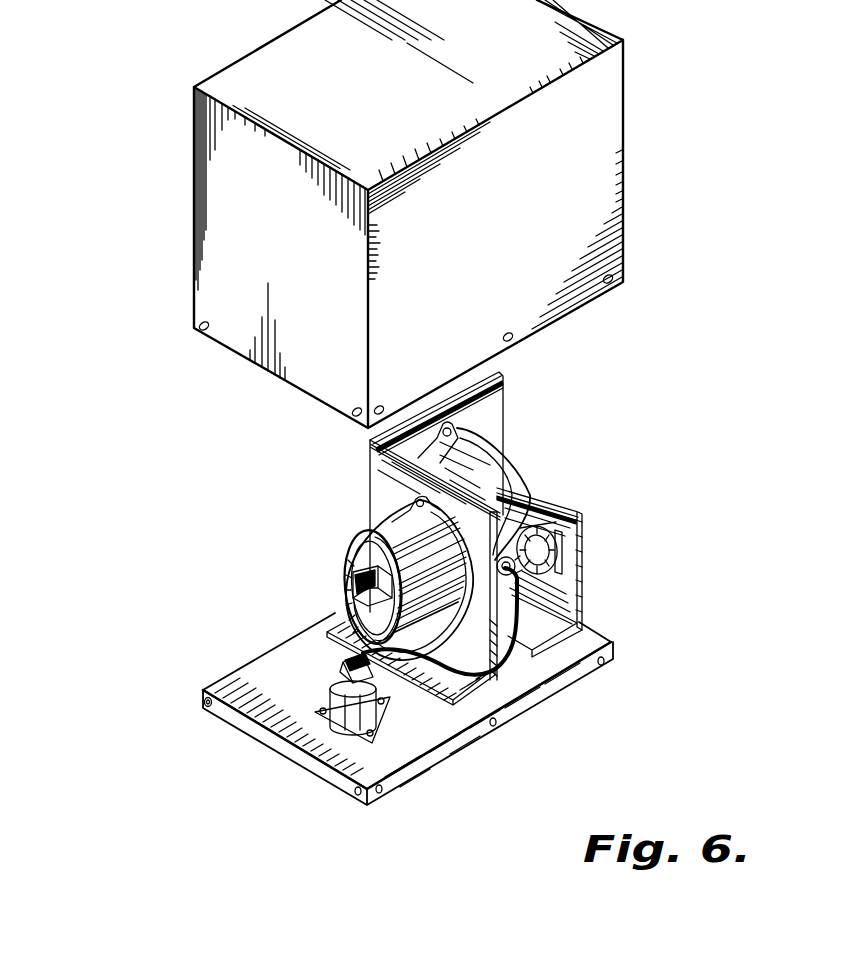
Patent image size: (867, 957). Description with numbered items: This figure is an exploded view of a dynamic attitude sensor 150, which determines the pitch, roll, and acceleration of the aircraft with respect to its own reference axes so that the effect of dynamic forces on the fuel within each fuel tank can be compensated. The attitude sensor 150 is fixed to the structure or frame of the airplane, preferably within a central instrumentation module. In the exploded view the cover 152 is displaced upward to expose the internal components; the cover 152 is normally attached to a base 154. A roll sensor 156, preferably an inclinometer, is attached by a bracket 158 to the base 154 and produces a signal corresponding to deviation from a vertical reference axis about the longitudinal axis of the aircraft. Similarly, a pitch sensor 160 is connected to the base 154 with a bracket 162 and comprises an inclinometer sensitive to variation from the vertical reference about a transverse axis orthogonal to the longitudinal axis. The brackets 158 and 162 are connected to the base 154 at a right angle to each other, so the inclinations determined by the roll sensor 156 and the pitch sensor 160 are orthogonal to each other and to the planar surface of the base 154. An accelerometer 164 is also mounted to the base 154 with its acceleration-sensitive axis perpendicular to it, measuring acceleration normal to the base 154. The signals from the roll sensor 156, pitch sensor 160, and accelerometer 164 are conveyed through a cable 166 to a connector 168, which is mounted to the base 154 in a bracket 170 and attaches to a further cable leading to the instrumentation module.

The attitude sensor 150 is at (184, 603).
The cover 152 is at (605, 215).
The base 154 is at (412, 772).
The roll sensor 156 is at (350, 555).
The bracket 158 is at (493, 663).
The pitch sensor 160 is at (512, 462).
The bracket 162 is at (502, 410).
The accelerometer 164 is at (340, 700).
The cable 166 is at (457, 670).
The connector 168 is at (512, 566).
The bracket 170 is at (577, 606).